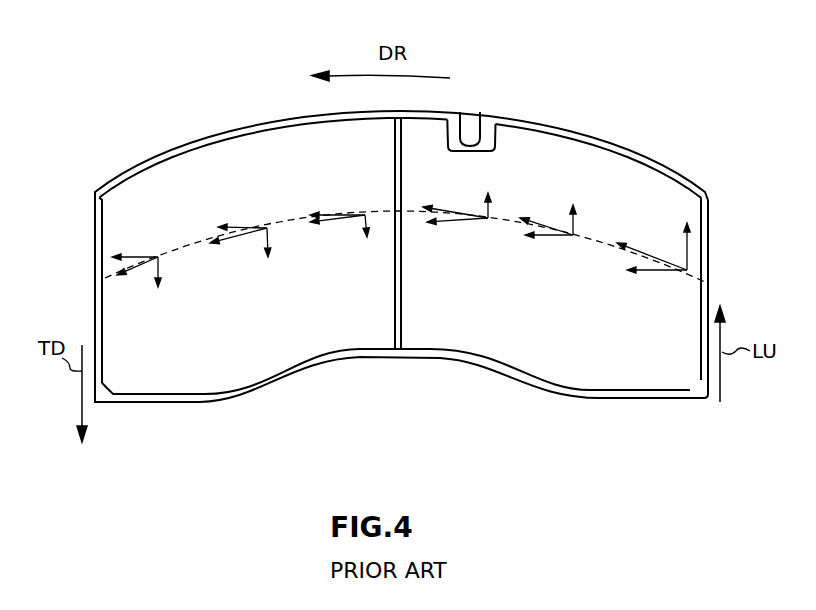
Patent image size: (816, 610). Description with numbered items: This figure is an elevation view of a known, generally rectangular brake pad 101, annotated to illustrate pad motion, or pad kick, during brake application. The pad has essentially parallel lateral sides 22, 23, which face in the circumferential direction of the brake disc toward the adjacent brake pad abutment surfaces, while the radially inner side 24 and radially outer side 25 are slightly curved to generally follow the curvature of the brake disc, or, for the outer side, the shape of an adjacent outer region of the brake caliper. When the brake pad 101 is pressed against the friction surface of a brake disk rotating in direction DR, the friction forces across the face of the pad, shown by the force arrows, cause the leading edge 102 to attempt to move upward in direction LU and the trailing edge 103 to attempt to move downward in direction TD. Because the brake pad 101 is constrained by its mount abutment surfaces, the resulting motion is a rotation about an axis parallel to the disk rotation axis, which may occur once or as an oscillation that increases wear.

The lateral side 22 is at (365, 253).
The lateral side 23 is at (710, 235).
The radially inner side 24 is at (200, 403).
The radially outer side 25 is at (607, 143).
The brake pad 101 is at (144, 163).
The leading edge 102 is at (714, 402).
The trailing edge 103 is at (80, 403).